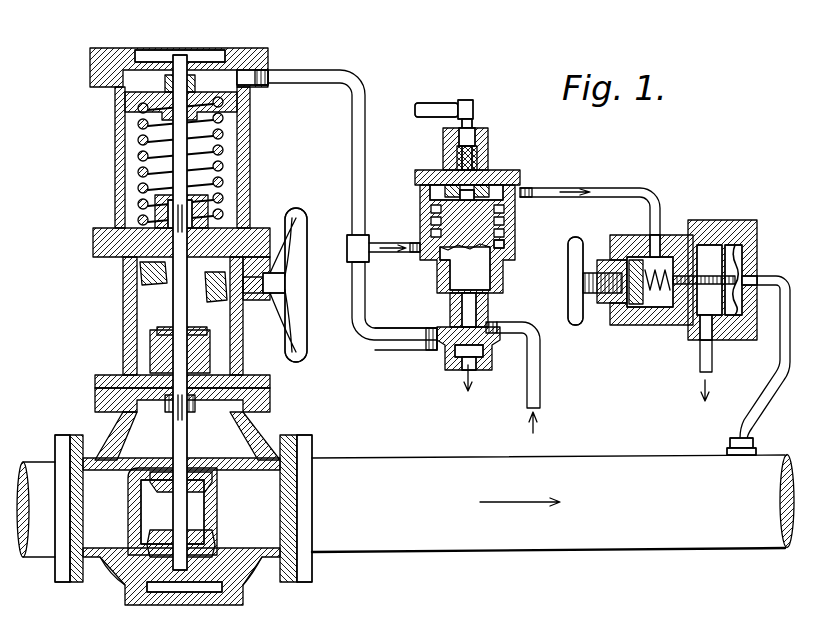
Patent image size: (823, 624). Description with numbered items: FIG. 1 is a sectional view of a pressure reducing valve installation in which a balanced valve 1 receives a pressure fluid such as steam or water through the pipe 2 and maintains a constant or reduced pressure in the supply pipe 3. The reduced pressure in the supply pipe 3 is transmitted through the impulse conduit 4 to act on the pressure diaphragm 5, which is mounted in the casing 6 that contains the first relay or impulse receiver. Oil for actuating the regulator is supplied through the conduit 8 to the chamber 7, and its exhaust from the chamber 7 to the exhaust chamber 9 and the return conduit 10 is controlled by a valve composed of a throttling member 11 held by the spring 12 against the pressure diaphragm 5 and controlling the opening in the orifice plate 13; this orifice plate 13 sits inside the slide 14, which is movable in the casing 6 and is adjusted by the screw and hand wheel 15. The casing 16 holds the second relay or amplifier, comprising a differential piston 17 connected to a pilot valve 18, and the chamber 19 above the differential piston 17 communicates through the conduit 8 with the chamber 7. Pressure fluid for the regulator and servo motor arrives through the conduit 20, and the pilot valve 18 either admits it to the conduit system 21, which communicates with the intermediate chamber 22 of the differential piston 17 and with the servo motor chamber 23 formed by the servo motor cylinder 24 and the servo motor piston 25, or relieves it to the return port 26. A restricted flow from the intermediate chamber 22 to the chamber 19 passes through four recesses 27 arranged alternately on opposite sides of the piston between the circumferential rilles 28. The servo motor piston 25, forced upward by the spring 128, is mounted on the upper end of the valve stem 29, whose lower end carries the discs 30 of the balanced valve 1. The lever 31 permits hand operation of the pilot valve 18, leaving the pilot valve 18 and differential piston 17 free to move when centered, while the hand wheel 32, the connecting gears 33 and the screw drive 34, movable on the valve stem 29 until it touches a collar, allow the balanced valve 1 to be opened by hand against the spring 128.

The balanced valve 1 is at (250, 432).
The pipe 2 is at (45, 470).
The supply pipe 3 is at (415, 460).
The impulse conduit 4 is at (778, 388).
The pressure diaphragm 5 is at (740, 262).
The casing 6 is at (708, 228).
The chamber 7 is at (665, 262).
The conduit 8 is at (605, 190).
The exhaust chamber 9 is at (698, 320).
The return conduit 10 is at (700, 364).
The throttling member 11 is at (670, 300).
The spring 12 is at (650, 308).
The orifice plate 13 is at (700, 252).
The slide 14 is at (618, 258).
The screw and hand wheel 15 is at (572, 310).
The casing 16 is at (503, 273).
The differential piston 17 is at (445, 272).
The pilot valve 18 is at (447, 358).
The chamber 19 is at (443, 183).
The conduit 20 is at (540, 382).
The conduit system 21 is at (355, 150).
The intermediate chamber 22 is at (440, 258).
The servo motor chamber 23 is at (204, 78).
The servo motor cylinder 24 is at (113, 85).
The servo motor piston 25 is at (133, 107).
The return port 26 is at (462, 365).
The recesses 27 is at (428, 222).
The circumferential rilles 28 is at (505, 224).
The valve stem 29 is at (178, 318).
The discs 30 is at (217, 533).
The lever 31 is at (436, 103).
The hand wheel 32 is at (303, 347).
The connecting gears 33 is at (207, 298).
The screw drive 34 is at (165, 217).
The spring 128 is at (140, 157).